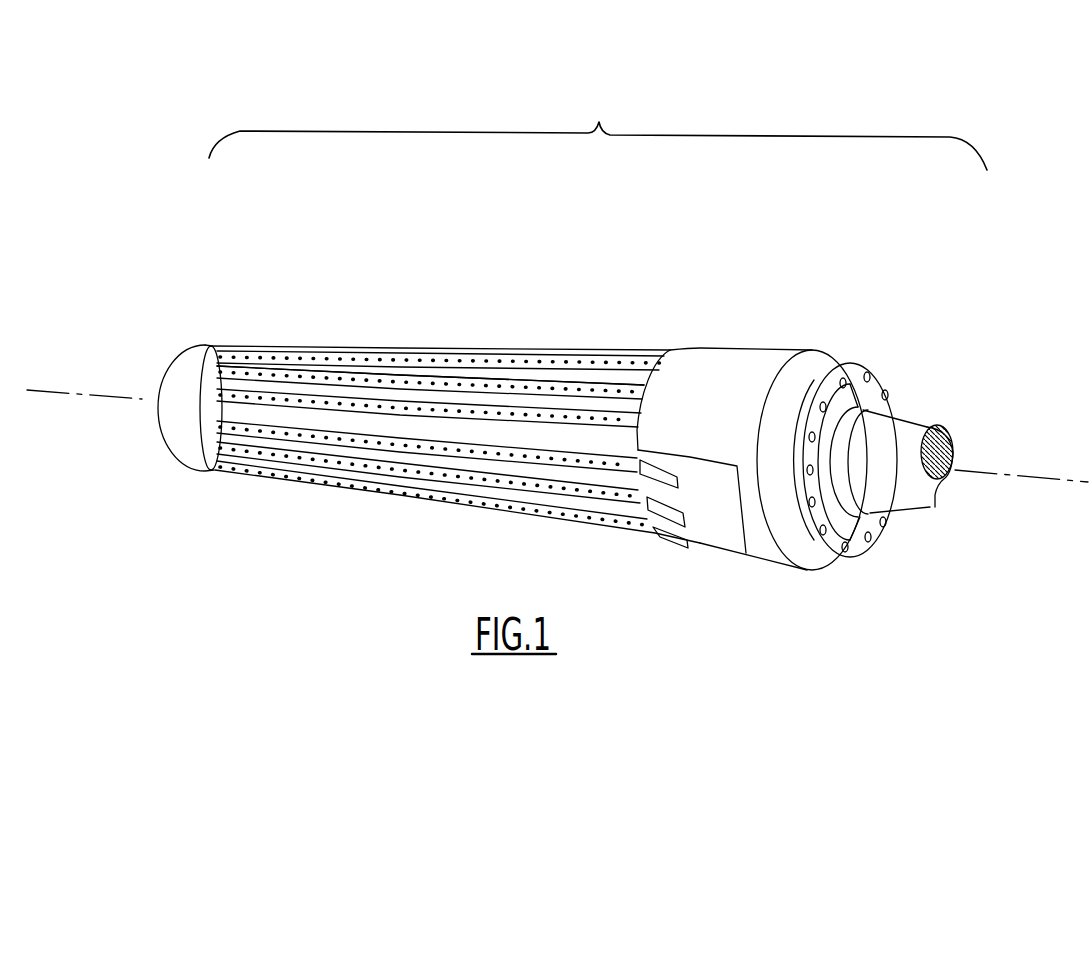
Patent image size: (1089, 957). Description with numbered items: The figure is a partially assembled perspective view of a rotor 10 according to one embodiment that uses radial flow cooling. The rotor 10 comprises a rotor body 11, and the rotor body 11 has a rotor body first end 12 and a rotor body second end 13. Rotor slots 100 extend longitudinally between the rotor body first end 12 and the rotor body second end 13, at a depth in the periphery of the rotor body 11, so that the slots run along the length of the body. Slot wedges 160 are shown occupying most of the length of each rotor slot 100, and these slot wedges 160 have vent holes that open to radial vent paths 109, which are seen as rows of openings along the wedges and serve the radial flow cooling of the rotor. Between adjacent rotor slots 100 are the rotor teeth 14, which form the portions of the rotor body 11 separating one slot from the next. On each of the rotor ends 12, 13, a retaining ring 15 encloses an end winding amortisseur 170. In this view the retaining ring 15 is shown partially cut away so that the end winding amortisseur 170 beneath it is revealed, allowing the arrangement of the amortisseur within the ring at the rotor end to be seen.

The rotor 10 is at (604, 90).
The rotor body 11 is at (440, 339).
The rotor body first end 12 is at (795, 441).
The rotor body second end 13 is at (217, 330).
The rotor teeth 14 is at (600, 380).
The retaining ring 15 is at (767, 360).
The radial vent paths 109 is at (358, 356).
The rotor slots 100 is at (460, 372).
The slot wedges 160 is at (430, 375).
The end winding amortisseur 170 is at (722, 545).